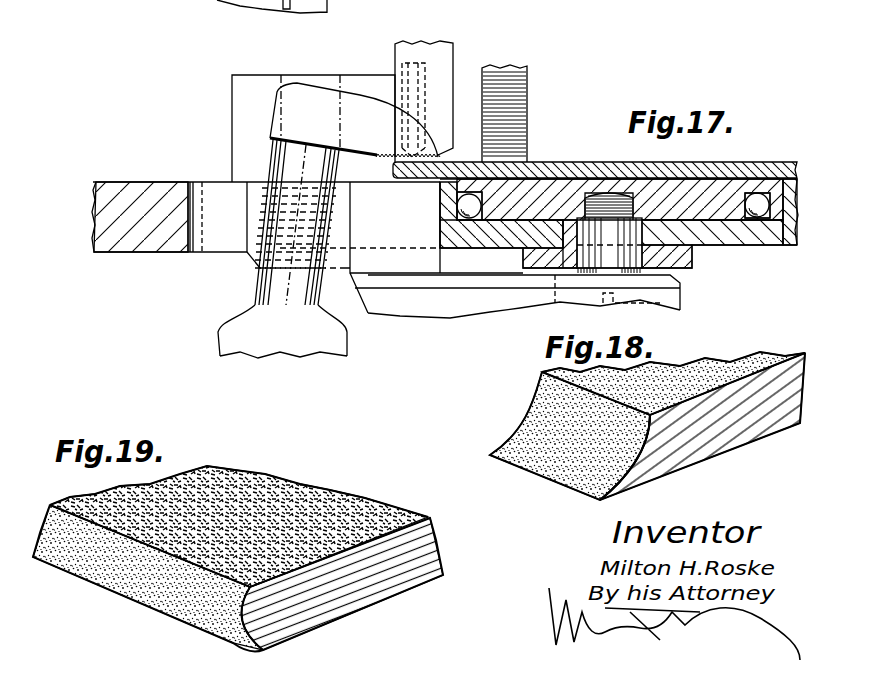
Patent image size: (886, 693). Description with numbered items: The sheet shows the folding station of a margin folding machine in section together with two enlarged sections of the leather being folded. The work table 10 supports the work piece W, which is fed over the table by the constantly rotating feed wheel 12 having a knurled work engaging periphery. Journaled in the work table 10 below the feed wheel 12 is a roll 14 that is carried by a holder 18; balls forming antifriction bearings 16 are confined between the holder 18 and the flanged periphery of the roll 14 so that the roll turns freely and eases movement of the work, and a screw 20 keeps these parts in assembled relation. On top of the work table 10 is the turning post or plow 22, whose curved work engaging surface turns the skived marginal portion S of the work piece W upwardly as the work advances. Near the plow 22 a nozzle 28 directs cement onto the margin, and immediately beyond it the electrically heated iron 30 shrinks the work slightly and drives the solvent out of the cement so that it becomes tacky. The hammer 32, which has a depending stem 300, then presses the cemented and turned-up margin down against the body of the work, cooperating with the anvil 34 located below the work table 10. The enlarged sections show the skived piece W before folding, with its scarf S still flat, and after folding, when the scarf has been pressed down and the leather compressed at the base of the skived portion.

In FIG. 17, the work table 10 is at (791, 232).
In FIG. 17, the feed wheel 12 is at (527, 110).
In FIG. 17, the roll 14 is at (725, 188).
In FIG. 17, the antifriction bearings 16 is at (758, 201).
In FIG. 17, the holder 18 is at (728, 238).
In FIG. 17, the screw 20 is at (660, 293).
In FIG. 17, the turning post or plow 22 is at (232, 100).
In FIG. 17, the nozzle 28 is at (425, 73).
In FIG. 17, the electrically heated iron 30 is at (455, 75).
In FIG. 17, the hammer 32 is at (362, 107).
In FIG. 17, the anvil 34 is at (389, 266).
In FIG. 17, the depending stem 300 is at (278, 162).
In FIG. 17, the work piece W is at (556, 161).
In FIG. 18, the work piece W is at (737, 440).
In FIG. 19, the work piece W is at (290, 625).
In FIG. 18, the skived marginal portion S is at (607, 490).